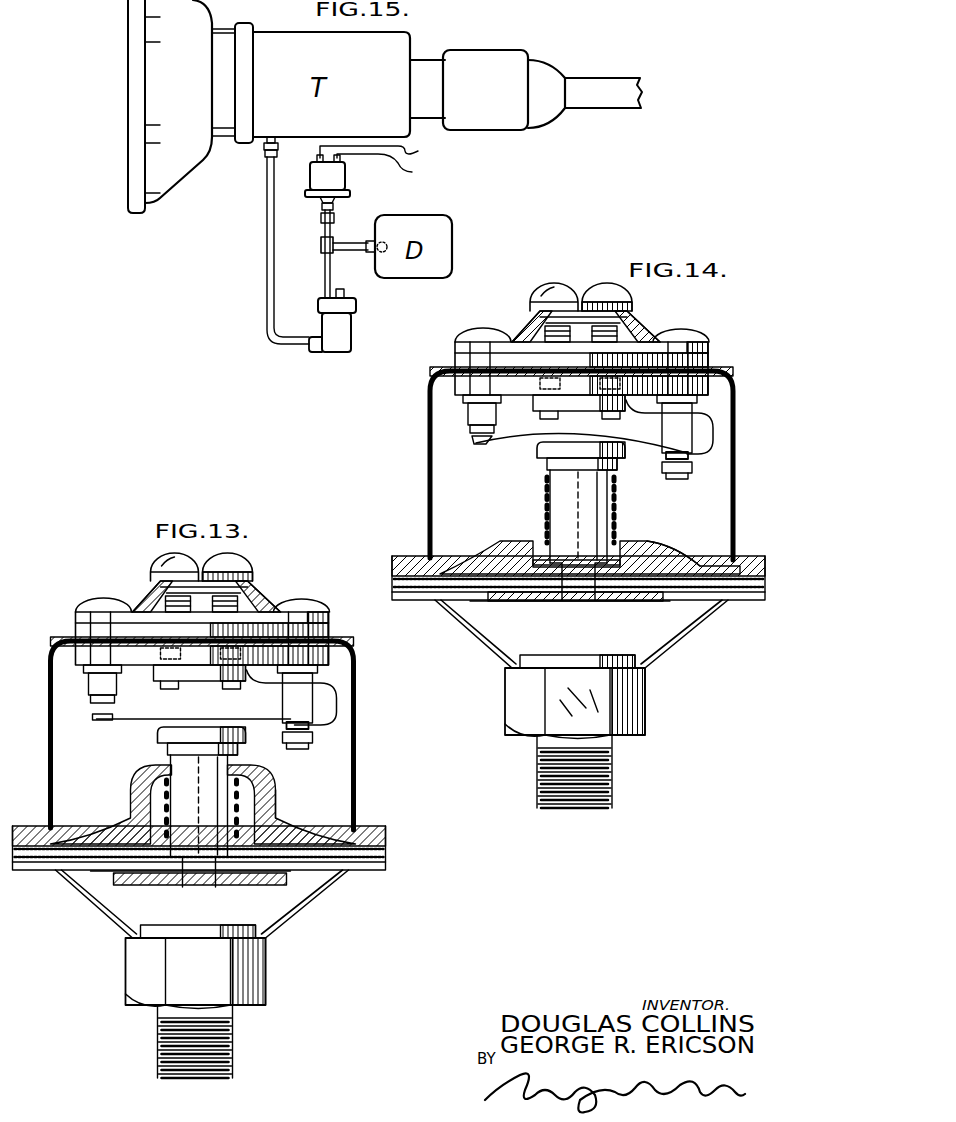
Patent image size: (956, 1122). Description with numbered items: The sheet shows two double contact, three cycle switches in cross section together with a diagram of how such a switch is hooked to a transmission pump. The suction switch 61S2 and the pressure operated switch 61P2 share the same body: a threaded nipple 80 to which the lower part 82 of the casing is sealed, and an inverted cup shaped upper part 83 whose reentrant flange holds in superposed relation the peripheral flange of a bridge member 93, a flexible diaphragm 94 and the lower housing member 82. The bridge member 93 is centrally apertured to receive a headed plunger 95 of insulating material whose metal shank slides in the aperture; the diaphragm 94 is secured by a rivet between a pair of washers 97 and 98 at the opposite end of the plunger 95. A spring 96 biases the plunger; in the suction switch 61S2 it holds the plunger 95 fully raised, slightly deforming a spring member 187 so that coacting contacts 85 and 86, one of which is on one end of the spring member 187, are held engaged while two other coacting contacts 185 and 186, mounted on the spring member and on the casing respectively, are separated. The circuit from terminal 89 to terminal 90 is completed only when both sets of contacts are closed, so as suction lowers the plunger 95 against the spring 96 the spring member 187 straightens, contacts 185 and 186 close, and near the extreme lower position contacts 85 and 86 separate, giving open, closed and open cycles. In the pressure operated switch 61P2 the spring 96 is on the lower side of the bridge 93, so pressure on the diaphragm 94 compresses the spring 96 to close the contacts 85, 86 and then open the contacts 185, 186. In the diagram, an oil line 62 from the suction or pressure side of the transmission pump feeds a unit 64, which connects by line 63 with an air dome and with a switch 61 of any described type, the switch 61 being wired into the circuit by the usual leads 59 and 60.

In FIG. 15, the lead 59 is at (383, 149).
In FIG. 15, the lead 60 is at (386, 168).
In FIG. 15, the switch 61 is at (348, 181).
In FIG. 15, the oil line 62 is at (267, 296).
In FIG. 15, the oil line 63 is at (338, 285).
In FIG. 15, the unit 64 is at (362, 342).
In FIG. 14, the suction switch 61S2 is at (412, 402).
In FIG. 13, the pressure operated switch 61P2 is at (211, 812).
In FIG. 14, the nipple 80 is at (650, 705).
In FIG. 13, the nipple 80 is at (176, 1008).
In FIG. 14, the lower part of casing 82 is at (700, 645).
In FIG. 13, the lower part of casing 82 is at (201, 904).
In FIG. 14, the upper part of casing 83 is at (428, 508).
In FIG. 13, the upper part of casing 83 is at (196, 753).
In FIG. 14, the contact 85 is at (470, 434).
In FIG. 13, the contact 85 is at (85, 692).
In FIG. 14, the contact 86 is at (474, 444).
In FIG. 13, the contact 86 is at (84, 726).
In FIG. 14, the terminal 89 is at (532, 300).
In FIG. 13, the terminal 89 is at (156, 563).
In FIG. 14, the terminal 90 is at (631, 300).
In FIG. 13, the terminal 90 is at (250, 567).
In FIG. 14, the bridge member 93 is at (512, 549).
In FIG. 13, the bridge member 93 is at (203, 804).
In FIG. 14, the flexible diaphragm 94 is at (484, 590).
In FIG. 13, the flexible diaphragm 94 is at (199, 883).
In FIG. 14, the headed plunger 95 is at (548, 460).
In FIG. 13, the headed plunger 95 is at (180, 807).
In FIG. 14, the spring 96 is at (620, 514).
In FIG. 13, the spring 96 is at (233, 810).
In FIG. 14, the washer 97 is at (640, 567).
In FIG. 13, the washer 97 is at (281, 810).
In FIG. 14, the washer 98 is at (636, 602).
In FIG. 13, the washer 98 is at (191, 896).
In FIG. 14, the contact 185 is at (690, 458).
In FIG. 13, the contact 185 is at (336, 728).
In FIG. 14, the contact 186 is at (692, 470).
In FIG. 13, the contact 186 is at (334, 747).
In FIG. 14, the spring member 187 is at (515, 440).
In FIG. 13, the spring member 187 is at (217, 697).